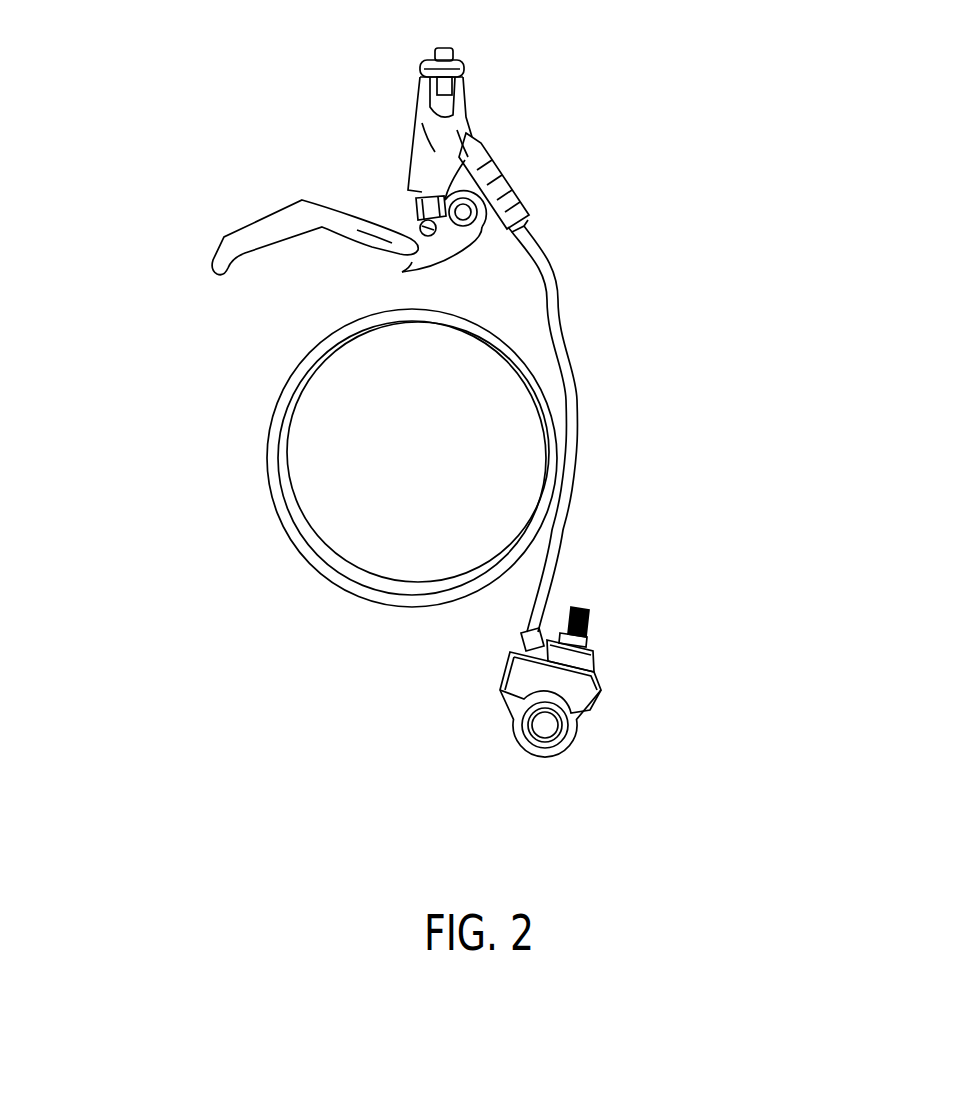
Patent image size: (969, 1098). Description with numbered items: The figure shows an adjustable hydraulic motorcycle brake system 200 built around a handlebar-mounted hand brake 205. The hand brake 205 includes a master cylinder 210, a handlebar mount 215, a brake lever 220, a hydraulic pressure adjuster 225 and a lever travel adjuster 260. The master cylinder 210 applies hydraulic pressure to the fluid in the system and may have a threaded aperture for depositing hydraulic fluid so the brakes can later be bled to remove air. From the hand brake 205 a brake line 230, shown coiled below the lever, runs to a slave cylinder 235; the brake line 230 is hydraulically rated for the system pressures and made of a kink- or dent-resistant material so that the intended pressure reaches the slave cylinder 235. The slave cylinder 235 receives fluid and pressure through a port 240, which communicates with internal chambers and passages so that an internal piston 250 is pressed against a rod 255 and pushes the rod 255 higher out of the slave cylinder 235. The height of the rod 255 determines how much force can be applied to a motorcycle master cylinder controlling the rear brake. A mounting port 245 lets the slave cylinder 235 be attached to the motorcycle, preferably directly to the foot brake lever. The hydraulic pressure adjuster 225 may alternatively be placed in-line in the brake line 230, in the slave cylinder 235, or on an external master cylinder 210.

The adjustable hydraulic motorcycle brake system 200 is at (622, 84).
The hand brake 205 is at (477, 150).
The master cylinder 210 is at (463, 97).
The handlebar mount 215 is at (425, 60).
The brake lever 220 is at (303, 198).
The hydraulic pressure adjuster 225 is at (415, 206).
The brake line 230 is at (574, 324).
The slave cylinder 235 is at (505, 678).
The port 240 is at (523, 643).
The mounting port 245 is at (556, 740).
The piston 250 is at (596, 648).
The rod 255 is at (587, 608).
The lever travel adjuster 260 is at (410, 268).